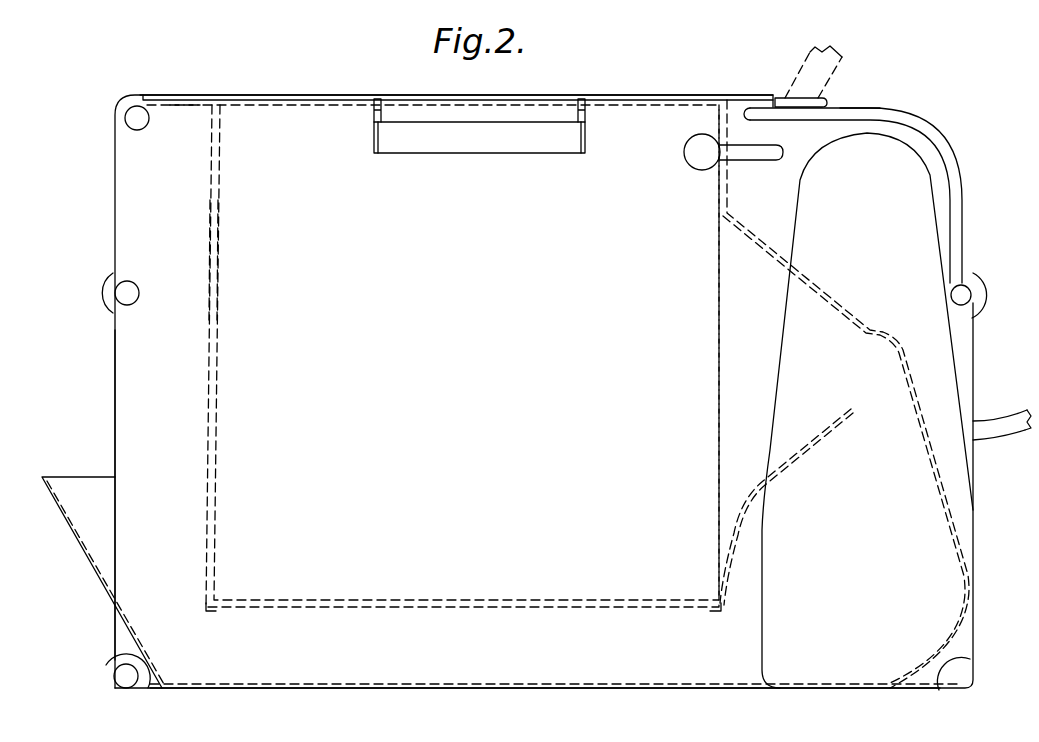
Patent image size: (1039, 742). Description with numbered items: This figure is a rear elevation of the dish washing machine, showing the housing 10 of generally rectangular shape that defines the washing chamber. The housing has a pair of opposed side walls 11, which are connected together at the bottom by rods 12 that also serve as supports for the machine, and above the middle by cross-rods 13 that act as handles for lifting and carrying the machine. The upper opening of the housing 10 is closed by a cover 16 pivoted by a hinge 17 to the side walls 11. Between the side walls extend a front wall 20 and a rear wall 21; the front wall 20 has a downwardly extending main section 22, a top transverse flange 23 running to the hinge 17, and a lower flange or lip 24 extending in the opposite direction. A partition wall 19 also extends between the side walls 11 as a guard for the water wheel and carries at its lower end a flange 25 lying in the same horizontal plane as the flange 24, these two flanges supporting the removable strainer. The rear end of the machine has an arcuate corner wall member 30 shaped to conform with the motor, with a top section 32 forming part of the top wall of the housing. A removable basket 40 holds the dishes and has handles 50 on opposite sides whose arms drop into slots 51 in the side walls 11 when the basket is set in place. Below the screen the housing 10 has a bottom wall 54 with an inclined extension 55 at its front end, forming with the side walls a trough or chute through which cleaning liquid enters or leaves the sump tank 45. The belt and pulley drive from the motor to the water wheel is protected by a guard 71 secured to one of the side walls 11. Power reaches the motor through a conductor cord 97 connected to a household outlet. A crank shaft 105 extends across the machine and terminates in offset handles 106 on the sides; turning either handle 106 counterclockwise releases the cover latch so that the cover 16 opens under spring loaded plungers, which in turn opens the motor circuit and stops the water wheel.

The housing 10 is at (113, 191).
The side walls 11 is at (113, 389).
The rods 12 is at (113, 690).
The cross-rods 13 is at (101, 294).
The cover 16 is at (440, 95).
The hinge 17 is at (124, 118).
The partition wall 19 is at (735, 523).
The front wall 20 is at (207, 428).
The rear wall 21 is at (820, 285).
The main section 22 is at (208, 254).
The top transverse flange 23 is at (187, 106).
The lower flange 24 is at (215, 611).
The flange 25 is at (718, 611).
The corner wall member 30 is at (962, 189).
The top section 32 is at (865, 108).
The basket 40 is at (721, 371).
The sump tank 45 is at (426, 680).
The handles 50 is at (485, 140).
The slots 51 is at (371, 112).
The bottom wall 54 is at (560, 688).
The inclined extension 55 is at (78, 547).
The guard 71 is at (778, 413).
The conductor cord 97 is at (1002, 433).
The crank shaft 105 is at (762, 161).
The offset handles 106 is at (695, 162).